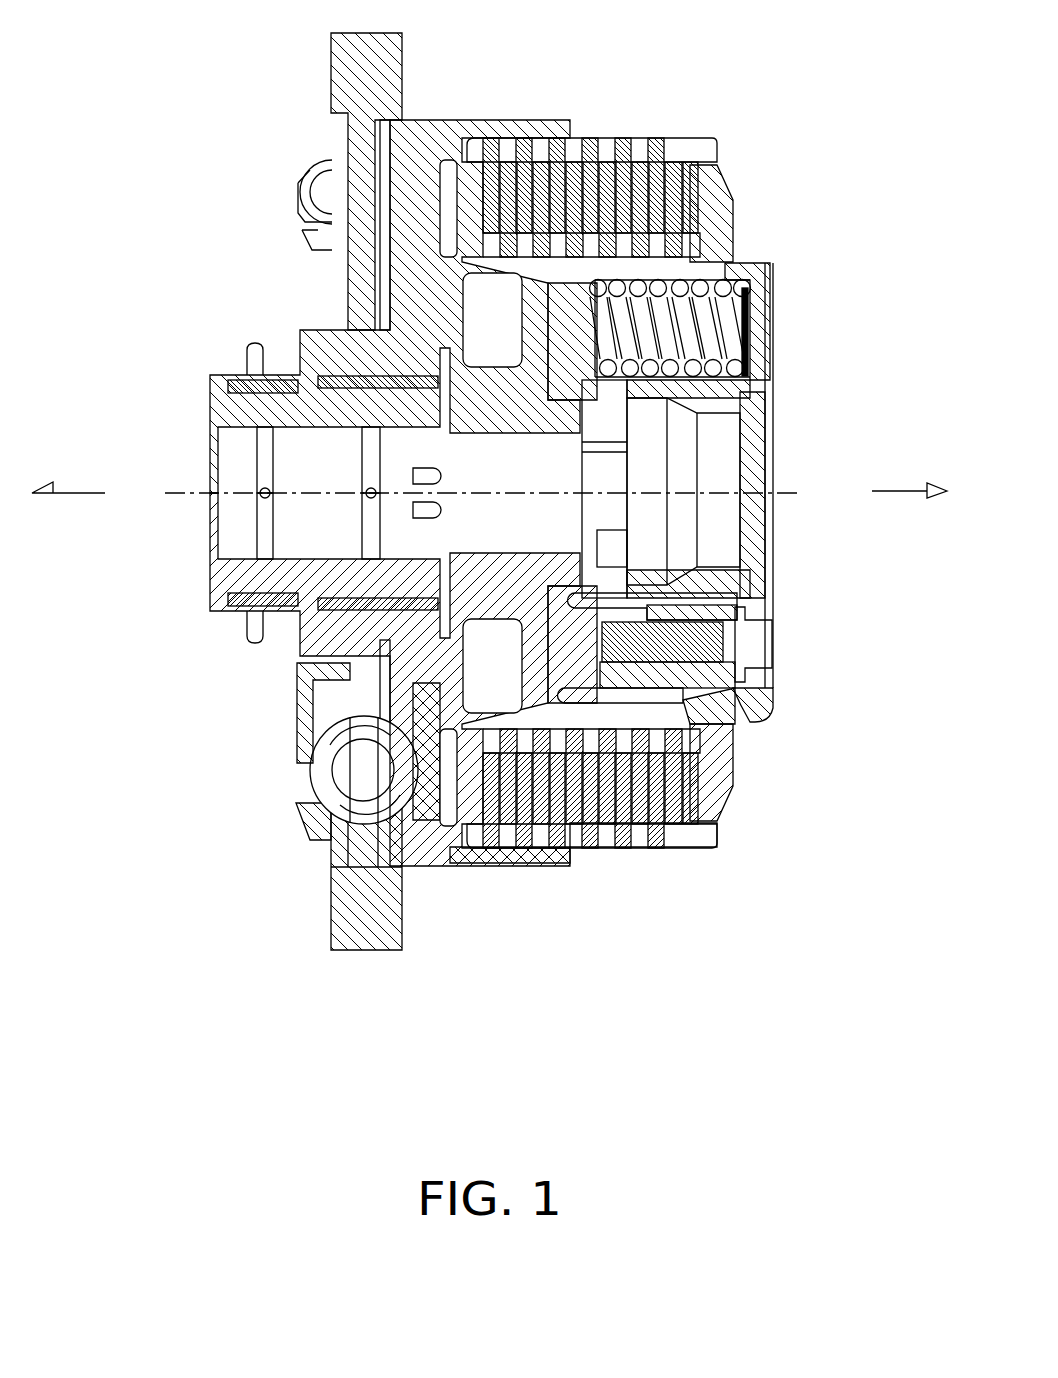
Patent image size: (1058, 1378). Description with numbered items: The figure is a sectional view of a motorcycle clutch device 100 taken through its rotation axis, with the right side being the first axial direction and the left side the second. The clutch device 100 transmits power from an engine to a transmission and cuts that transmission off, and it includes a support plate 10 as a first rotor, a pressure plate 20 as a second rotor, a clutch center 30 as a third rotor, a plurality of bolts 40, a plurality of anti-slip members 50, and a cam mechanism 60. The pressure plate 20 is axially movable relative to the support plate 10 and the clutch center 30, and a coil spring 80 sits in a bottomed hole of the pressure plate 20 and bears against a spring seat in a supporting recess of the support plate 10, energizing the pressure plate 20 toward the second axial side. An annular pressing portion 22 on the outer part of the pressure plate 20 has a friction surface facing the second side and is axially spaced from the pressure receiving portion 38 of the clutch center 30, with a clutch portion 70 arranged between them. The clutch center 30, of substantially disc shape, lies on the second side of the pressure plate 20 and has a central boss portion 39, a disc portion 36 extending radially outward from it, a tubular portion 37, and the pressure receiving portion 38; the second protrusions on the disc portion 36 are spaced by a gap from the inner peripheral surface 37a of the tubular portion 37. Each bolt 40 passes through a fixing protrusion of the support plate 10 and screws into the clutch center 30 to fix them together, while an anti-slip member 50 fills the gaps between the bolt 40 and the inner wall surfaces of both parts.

The clutch device 100 is at (750, 97).
The support plate 10 is at (785, 700).
The pressure plate 20 is at (737, 803).
The pressing portion 22 is at (717, 210).
The clutch center 30 is at (440, 718).
The disc portion 36 is at (540, 330).
The tubular portion 37 is at (660, 262).
The inner peripheral surface 37a is at (375, 690).
The pressure receiving portion 38 is at (352, 157).
The boss portion 39 is at (547, 407).
The bolt 40 is at (760, 643).
The anti-slip member 50 is at (743, 600).
The cam mechanism 60 is at (658, 680).
The clutch portion 70 is at (667, 863).
The coil spring 80 is at (733, 348).